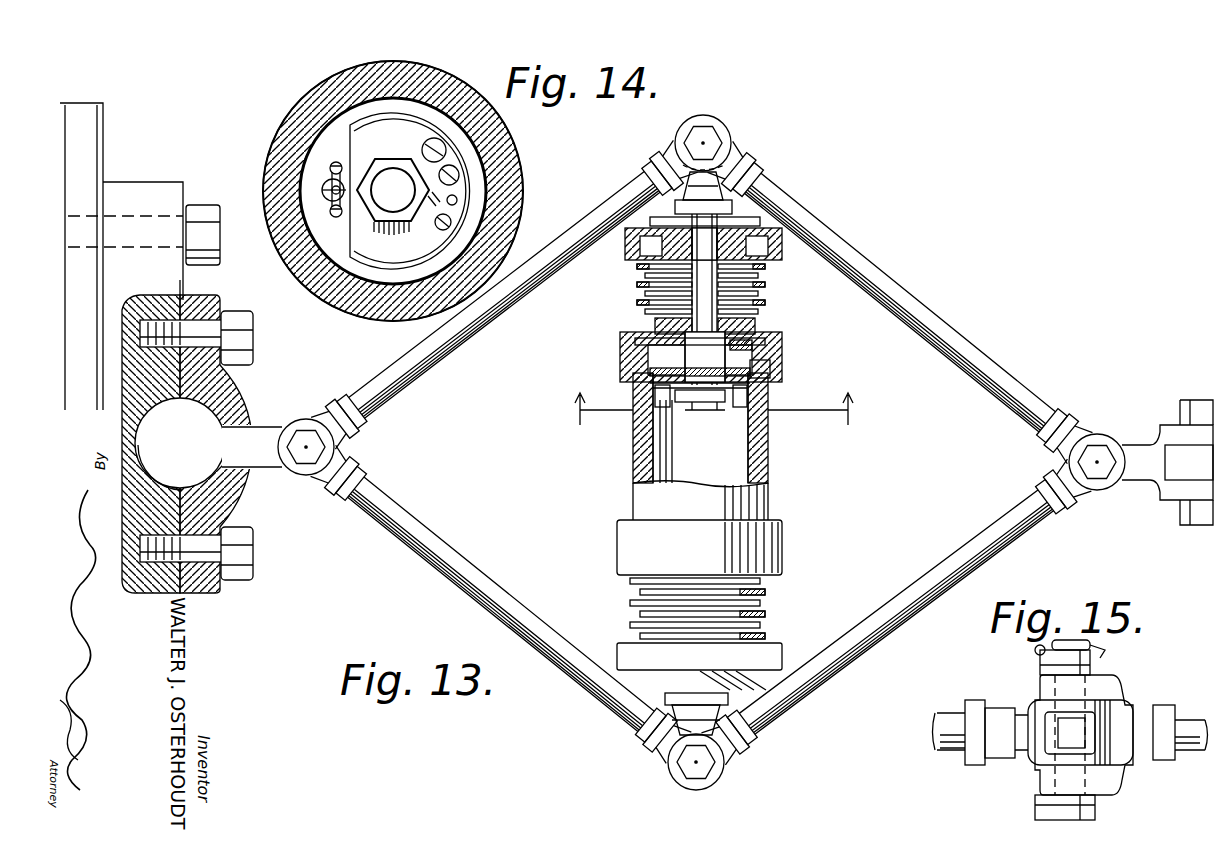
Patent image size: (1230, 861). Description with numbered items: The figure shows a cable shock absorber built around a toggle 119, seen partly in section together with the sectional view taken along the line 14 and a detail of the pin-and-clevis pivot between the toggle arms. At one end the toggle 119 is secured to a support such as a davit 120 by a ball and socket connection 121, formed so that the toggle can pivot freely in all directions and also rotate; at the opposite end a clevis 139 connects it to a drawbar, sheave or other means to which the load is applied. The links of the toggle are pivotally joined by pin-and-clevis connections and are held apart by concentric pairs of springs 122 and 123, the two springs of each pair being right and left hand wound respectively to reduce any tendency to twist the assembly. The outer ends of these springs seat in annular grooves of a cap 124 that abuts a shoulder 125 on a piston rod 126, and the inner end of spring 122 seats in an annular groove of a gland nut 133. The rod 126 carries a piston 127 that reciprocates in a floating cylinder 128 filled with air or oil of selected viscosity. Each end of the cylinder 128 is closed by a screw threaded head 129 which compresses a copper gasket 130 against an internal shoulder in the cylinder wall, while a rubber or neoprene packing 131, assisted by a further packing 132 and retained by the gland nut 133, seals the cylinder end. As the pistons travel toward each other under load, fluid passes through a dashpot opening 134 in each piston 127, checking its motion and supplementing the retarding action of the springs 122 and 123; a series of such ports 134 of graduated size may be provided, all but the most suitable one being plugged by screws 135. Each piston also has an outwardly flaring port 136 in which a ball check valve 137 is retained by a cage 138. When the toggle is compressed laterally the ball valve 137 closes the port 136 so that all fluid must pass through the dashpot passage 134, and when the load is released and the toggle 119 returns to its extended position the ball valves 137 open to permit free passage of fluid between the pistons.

In FIG. 13, the section line 14 is at (713, 409).
In FIG. 13, the toggle 119 is at (866, 270).
In FIG. 15, the toggle 119 is at (962, 700).
In FIG. 13, the davit 120 is at (160, 185).
In FIG. 13, the ball and socket connection 121 is at (195, 412).
In FIG. 13, the spring 122 is at (740, 312).
In FIG. 13, the spring 123 is at (752, 345).
In FIG. 13, the cap 124 is at (770, 205).
In FIG. 13, the shoulder 125 is at (728, 160).
In FIG. 13, the piston rod 126 is at (730, 288).
In FIG. 13, the piston 127 is at (772, 370).
In FIG. 14, the piston 127 is at (458, 200).
In FIG. 13, the floating cylinder 128 is at (770, 452).
In FIG. 14, the floating cylinder 128 is at (485, 240).
In FIG. 13, the screw threaded head 129 is at (622, 357).
In FIG. 13, the copper gasket 130 is at (640, 384).
In FIG. 13, the rubber or neoprene packing 131 is at (637, 350).
In FIG. 13, the packing 132 is at (655, 330).
In FIG. 13, the gland nut 133 is at (660, 315).
In FIG. 14, the dashpot opening 134 is at (459, 176).
In FIG. 13, the screw 135 is at (750, 398).
In FIG. 14, the screw 135 is at (446, 150).
In FIG. 13, the port 136 is at (640, 374).
In FIG. 14, the port 136 is at (322, 193).
In FIG. 13, the ball check valve 137 is at (655, 398).
In FIG. 14, the ball check valve 137 is at (327, 186).
In FIG. 13, the cage 138 is at (690, 400).
In FIG. 14, the cage 138 is at (331, 170).
In FIG. 13, the clevis 139 is at (1140, 448).